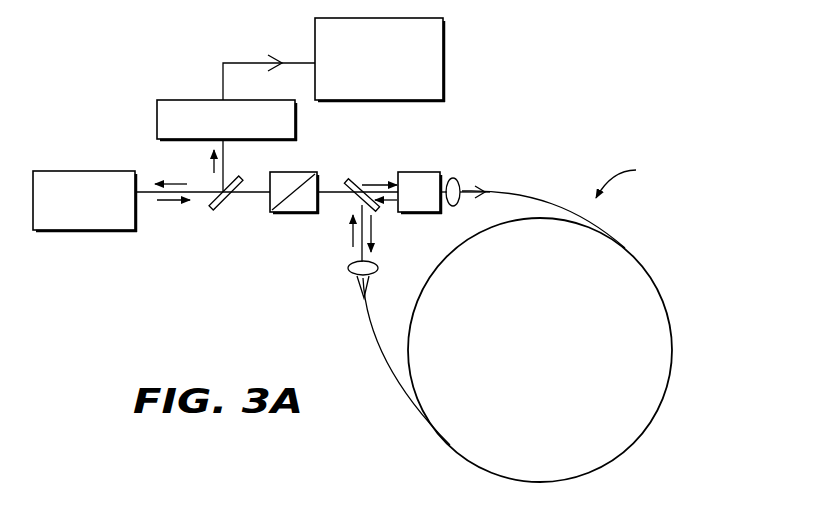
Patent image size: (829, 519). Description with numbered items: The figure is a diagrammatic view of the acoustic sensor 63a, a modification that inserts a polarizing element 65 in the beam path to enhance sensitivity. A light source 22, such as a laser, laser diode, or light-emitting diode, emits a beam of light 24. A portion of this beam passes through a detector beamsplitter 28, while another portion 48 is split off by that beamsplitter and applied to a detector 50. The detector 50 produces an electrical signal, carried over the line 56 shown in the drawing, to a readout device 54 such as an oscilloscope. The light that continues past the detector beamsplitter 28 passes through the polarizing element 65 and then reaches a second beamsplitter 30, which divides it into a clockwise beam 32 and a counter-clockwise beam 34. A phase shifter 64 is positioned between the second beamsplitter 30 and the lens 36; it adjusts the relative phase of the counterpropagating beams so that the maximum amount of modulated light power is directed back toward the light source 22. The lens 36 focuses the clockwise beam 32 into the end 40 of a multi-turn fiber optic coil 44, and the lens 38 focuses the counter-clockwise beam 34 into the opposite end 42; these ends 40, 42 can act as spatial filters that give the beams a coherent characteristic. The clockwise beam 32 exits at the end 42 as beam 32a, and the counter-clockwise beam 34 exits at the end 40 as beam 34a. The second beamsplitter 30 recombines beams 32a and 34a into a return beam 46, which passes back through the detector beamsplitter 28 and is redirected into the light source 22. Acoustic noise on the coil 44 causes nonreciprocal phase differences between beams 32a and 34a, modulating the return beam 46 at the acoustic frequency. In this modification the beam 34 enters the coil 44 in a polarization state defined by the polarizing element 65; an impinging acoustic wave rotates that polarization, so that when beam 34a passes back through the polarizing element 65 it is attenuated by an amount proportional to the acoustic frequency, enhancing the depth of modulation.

The light source 22 is at (98, 231).
The beam of light 24 is at (160, 201).
The detector beamsplitter 28 is at (220, 205).
The second beamsplitter 30 is at (356, 154).
The clockwise beam 32 is at (368, 183).
The exiting clockwise beam 32a is at (348, 236).
The counter-clockwise beam 34 is at (376, 232).
The exiting counter-clockwise beam 34a is at (383, 204).
The lens 36 is at (460, 184).
The lens 38 is at (376, 272).
The coil end 40 is at (490, 191).
The coil end 42 is at (360, 292).
The fiber optic coil 44 is at (648, 262).
The return beam 46 is at (180, 182).
The beam portion 48 is at (211, 167).
The detector 50 is at (192, 100).
The readout device 54 is at (444, 50).
The detector output signal line 56 is at (250, 63).
The sensor 63a is at (642, 178).
The phase shifter 64 is at (406, 172).
The polarizing element 65 is at (278, 212).